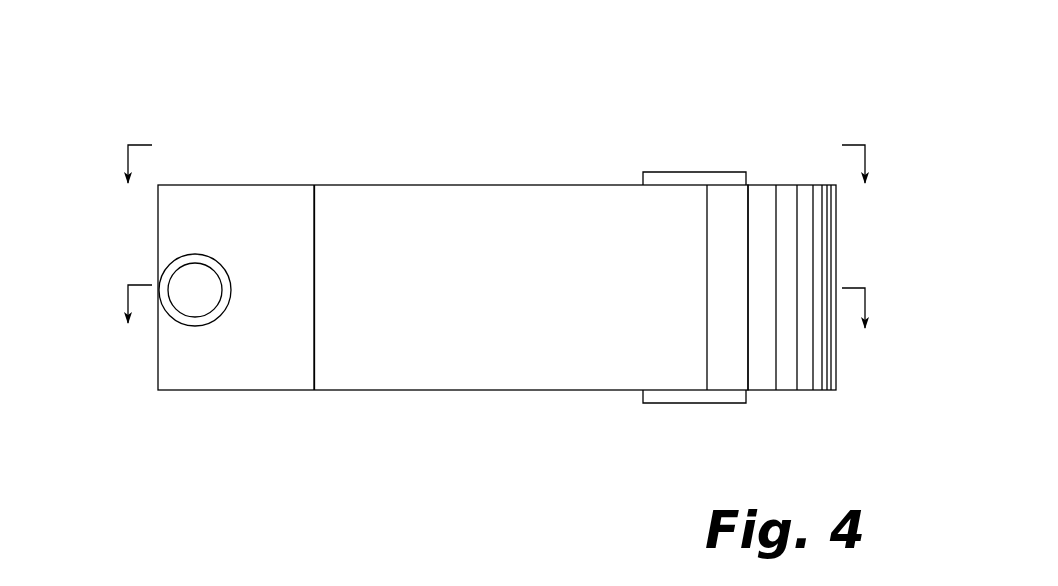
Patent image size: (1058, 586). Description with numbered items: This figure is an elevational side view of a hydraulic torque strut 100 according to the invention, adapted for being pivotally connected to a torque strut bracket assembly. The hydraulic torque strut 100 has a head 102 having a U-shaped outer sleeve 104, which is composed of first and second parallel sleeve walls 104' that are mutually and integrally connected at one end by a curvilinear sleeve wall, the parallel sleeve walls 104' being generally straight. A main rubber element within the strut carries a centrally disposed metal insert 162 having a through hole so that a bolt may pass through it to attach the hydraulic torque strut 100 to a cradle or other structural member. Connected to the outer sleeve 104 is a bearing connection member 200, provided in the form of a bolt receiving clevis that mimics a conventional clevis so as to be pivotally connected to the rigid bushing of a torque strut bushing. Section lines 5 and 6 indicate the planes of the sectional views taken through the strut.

The hydraulic torque strut 100 is at (519, 262).
The head 102 is at (814, 241).
The U-shaped outer sleeve 104 is at (453, 331).
The first and second parallel sleeve walls 104' is at (511, 287).
The metal insert 162 is at (700, 171).
The bearing connection member 200 is at (453, 282).
The section line 5- 5 is at (492, 166).
The section line 6- 6 is at (491, 307).